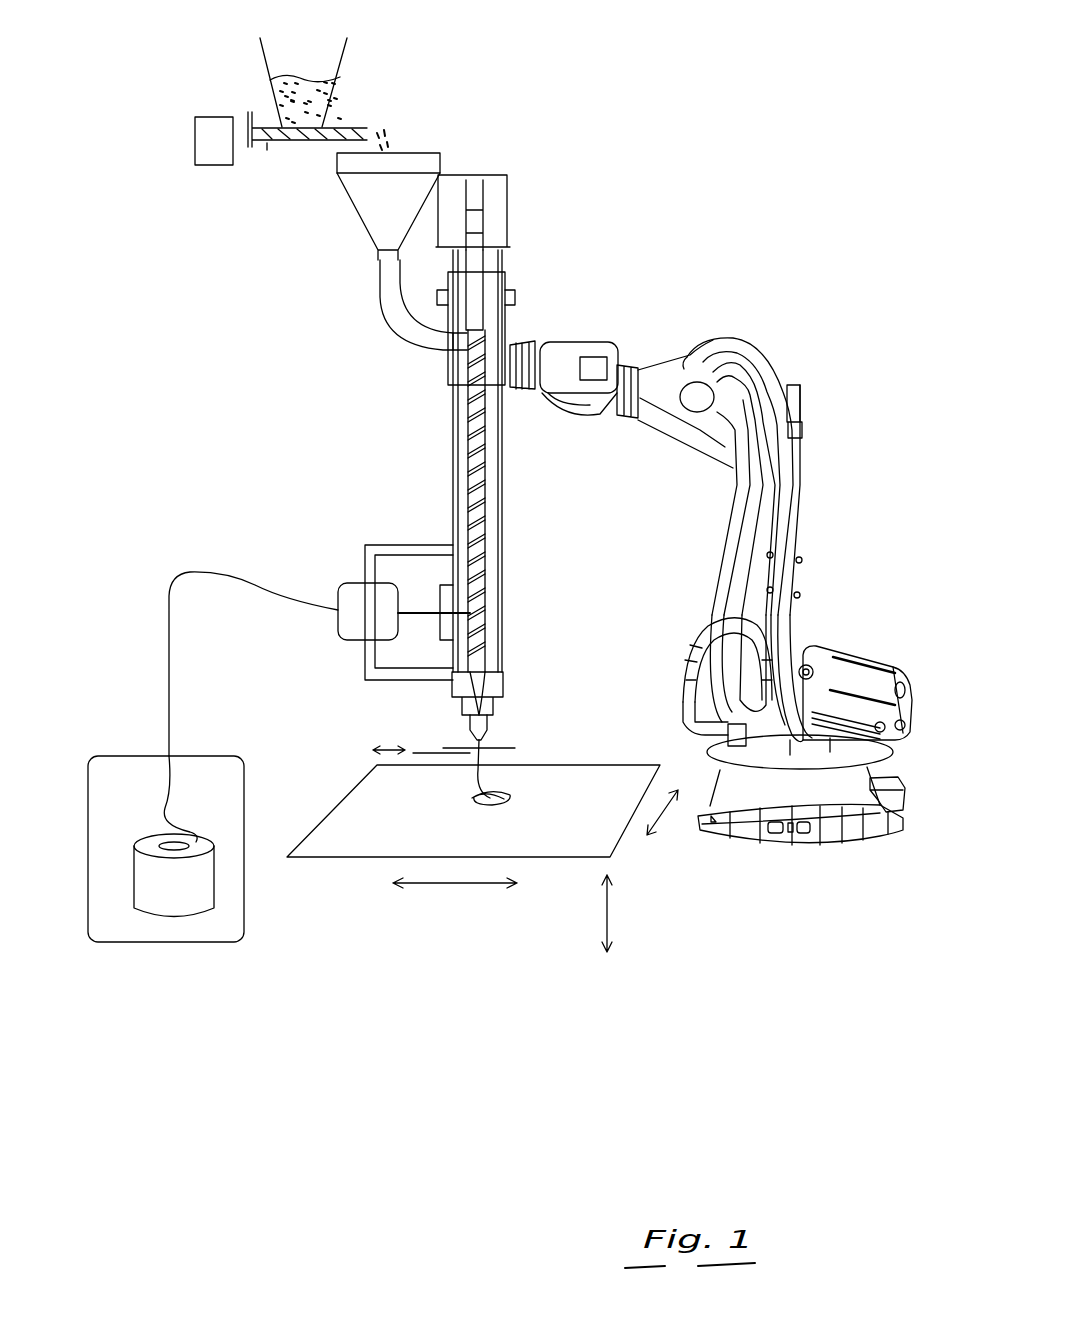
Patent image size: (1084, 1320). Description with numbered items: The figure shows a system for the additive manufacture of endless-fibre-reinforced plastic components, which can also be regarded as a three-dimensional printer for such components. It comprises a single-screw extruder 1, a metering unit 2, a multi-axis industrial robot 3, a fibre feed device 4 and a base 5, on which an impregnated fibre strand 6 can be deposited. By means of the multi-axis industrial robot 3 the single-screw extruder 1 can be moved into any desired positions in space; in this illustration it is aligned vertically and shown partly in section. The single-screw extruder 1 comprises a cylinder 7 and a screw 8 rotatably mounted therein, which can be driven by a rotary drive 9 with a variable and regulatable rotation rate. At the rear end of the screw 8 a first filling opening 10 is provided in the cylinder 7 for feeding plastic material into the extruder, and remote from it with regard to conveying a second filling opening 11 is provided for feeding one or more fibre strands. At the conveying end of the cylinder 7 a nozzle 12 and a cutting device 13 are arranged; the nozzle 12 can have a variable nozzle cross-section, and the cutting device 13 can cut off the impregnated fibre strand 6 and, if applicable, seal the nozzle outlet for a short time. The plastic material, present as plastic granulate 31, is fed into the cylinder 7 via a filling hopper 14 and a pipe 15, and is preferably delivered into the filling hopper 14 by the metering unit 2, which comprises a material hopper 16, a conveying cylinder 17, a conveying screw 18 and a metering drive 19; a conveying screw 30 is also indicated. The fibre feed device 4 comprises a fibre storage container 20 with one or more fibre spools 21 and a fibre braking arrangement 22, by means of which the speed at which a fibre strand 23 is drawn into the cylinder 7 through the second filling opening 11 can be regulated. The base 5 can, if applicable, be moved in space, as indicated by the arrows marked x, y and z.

The single-screw extruder 1 is at (420, 415).
The metering unit 2 is at (238, 80).
The multi-axis industrial robot 3 is at (836, 455).
The fibre feed device 4 is at (302, 549).
The base 5 is at (335, 858).
The impregnated fibre strand 6 is at (500, 795).
The cylinder 7 is at (490, 472).
The screw 8 is at (478, 520).
The rotary drive 9 is at (508, 207).
The first filling opening 10 is at (458, 346).
The second filling opening 11 is at (470, 613).
The nozzle 12 is at (490, 733).
The cutting device 13 is at (425, 745).
The filling hopper 14 is at (352, 205).
The pipe 15 is at (380, 305).
The material hopper 16 is at (347, 57).
The conveying cylinder 17 is at (267, 144).
The conveying screw 18 is at (350, 122).
The metering drive 19 is at (193, 142).
The fibre storage container 20 is at (120, 944).
The fibre spool 21 is at (186, 896).
The fibre braking arrangement 22 is at (382, 624).
The fibre strand 23 is at (168, 655).
The conveying screw 30 is at (515, 610).
The plastic granulate 31 is at (393, 138).